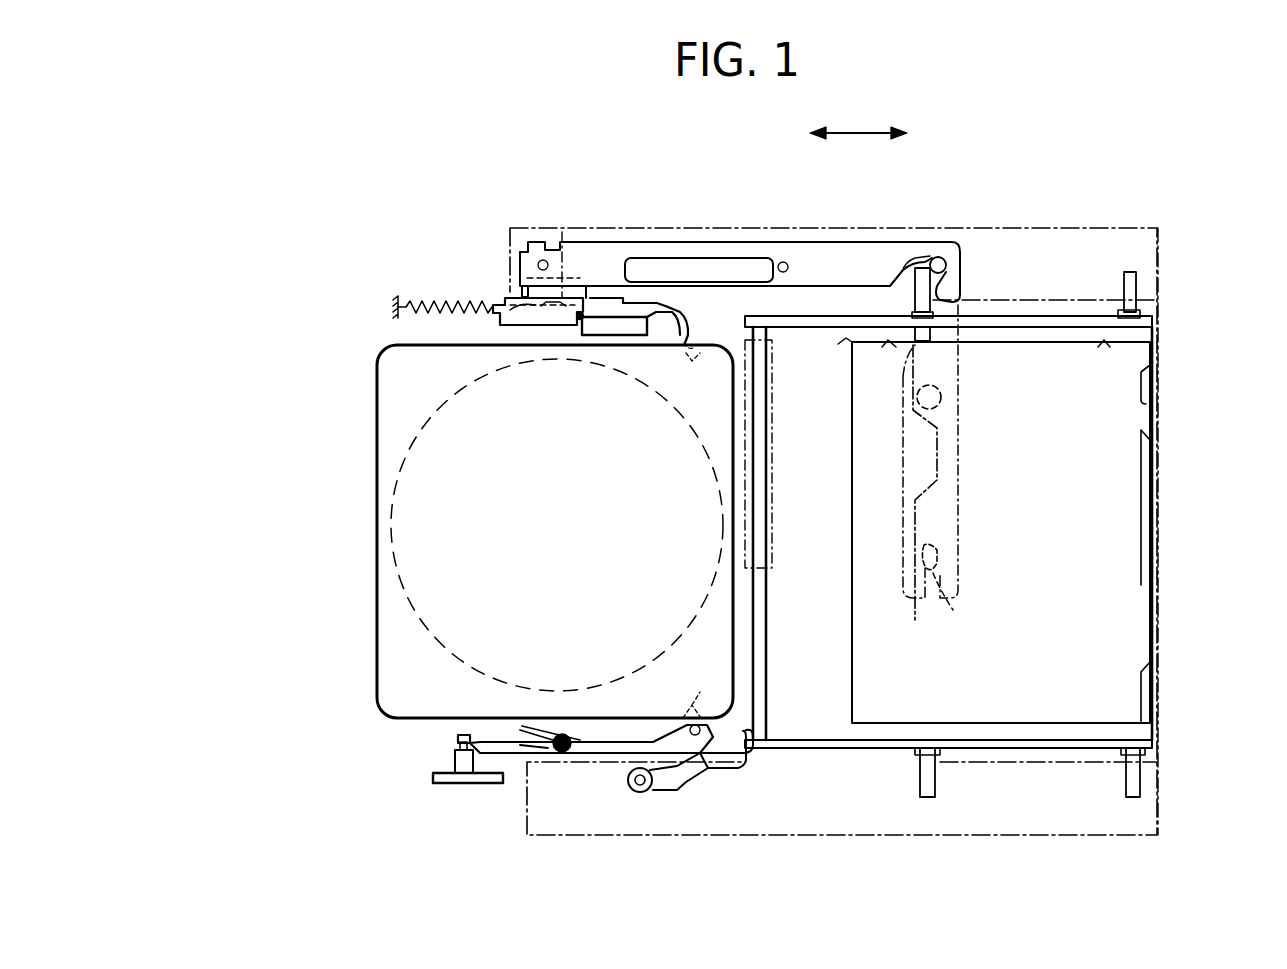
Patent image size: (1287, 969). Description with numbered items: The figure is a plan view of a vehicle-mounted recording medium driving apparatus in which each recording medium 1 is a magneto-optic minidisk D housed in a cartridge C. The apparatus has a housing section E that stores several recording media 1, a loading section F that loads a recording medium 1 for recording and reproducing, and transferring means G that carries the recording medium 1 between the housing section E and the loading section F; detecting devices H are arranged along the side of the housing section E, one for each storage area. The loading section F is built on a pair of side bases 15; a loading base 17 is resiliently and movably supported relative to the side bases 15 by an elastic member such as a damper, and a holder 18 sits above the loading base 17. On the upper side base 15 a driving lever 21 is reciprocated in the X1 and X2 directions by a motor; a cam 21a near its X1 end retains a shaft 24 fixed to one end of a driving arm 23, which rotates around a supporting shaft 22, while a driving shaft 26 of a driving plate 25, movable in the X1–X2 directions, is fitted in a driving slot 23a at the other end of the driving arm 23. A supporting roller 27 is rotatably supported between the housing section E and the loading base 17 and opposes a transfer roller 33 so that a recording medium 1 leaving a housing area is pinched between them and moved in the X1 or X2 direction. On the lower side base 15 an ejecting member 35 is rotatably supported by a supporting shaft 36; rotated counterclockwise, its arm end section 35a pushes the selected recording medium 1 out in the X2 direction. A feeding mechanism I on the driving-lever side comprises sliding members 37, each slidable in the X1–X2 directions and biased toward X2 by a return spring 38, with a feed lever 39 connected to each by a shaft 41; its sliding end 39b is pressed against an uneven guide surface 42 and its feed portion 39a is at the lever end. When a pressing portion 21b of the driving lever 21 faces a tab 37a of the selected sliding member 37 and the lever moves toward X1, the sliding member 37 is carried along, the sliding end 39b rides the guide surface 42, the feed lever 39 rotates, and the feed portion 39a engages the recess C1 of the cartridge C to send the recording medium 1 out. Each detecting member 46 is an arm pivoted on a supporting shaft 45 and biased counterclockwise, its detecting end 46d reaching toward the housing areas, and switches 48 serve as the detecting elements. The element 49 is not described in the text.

The recording medium 1 is at (377, 581).
The side base 15 is at (1060, 224).
The loading base 17 is at (830, 750).
The holder 18 is at (893, 700).
The driving lever 21 is at (698, 238).
The cam 21a is at (895, 260).
The pressing portion 21b is at (520, 284).
The supporting shaft 22 is at (945, 398).
The driving arm 23 is at (962, 464).
The driving slot 23a is at (950, 602).
The shaft 24 is at (945, 258).
The driving plate 25 is at (1165, 364).
The driving shaft 26 is at (940, 562).
The supporting roller 27 is at (760, 587).
The transfer roller 33 is at (775, 454).
The ejecting member 35 is at (700, 792).
The arm end section 35a is at (745, 770).
The supporting shaft 36 is at (637, 793).
The sliding member 37 is at (492, 322).
The tab 37a is at (590, 298).
The return spring 38 is at (432, 300).
The feed lever 39 is at (700, 310).
The feed portion 39a is at (675, 342).
The sliding end 39b is at (530, 318).
The shaft 41 is at (580, 325).
The uneven guide surface 42 is at (562, 230).
The supporting shaft 45 is at (562, 735).
The detecting member 46 is at (585, 754).
The detecting end 46d is at (690, 717).
The switch 48 is at (454, 764).
The base member 49 is at (470, 786).
The cartridge C is at (377, 484).
The recess C1 is at (698, 357).
The minidisk D is at (410, 614).
The housing section E is at (368, 685).
The loading section F is at (1105, 614).
The transferring means G is at (766, 638).
The detecting device H is at (595, 798).
The feeding mechanism I is at (696, 314).
The X1 direction X1 is at (938, 133).
The X2 direction X2 is at (786, 133).